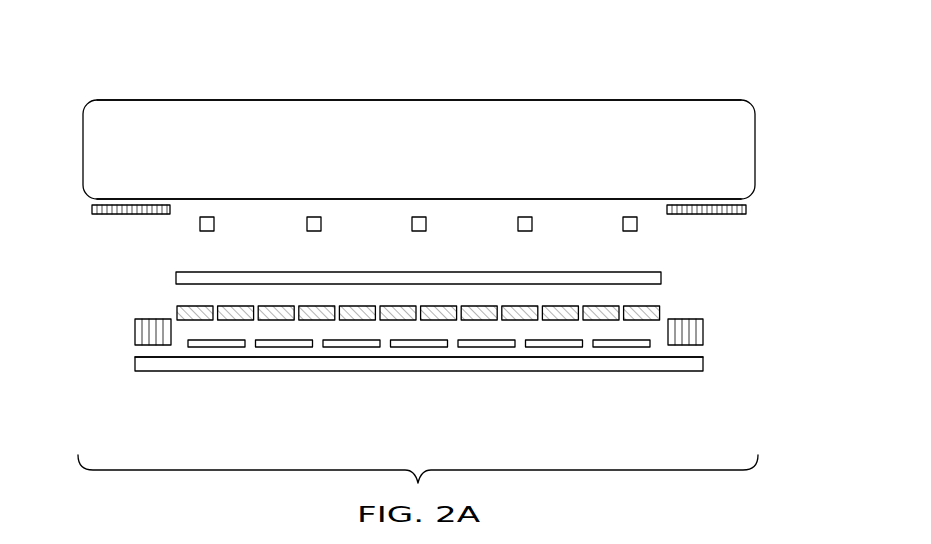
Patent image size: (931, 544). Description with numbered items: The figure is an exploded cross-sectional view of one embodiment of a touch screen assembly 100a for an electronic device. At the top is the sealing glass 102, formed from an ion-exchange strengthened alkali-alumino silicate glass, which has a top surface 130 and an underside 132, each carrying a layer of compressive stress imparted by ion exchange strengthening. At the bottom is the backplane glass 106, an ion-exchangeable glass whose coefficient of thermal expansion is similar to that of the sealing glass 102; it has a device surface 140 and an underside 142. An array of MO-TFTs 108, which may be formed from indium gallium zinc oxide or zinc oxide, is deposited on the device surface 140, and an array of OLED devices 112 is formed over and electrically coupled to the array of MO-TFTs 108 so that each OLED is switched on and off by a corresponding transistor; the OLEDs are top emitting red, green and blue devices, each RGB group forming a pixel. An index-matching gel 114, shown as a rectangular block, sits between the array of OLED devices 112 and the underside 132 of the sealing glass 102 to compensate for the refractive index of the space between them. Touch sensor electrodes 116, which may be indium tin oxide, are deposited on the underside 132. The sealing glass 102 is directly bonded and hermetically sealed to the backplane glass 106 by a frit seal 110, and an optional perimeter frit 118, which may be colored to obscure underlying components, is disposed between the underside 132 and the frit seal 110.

The touch screen assembly 100a is at (703, 65).
The sealing glass 102 is at (768, 134).
The top surface 130 is at (230, 100).
The underside 132 is at (232, 199).
The perimeter frit 118 is at (93, 208).
The touch sensor electrodes 116 is at (427, 222).
The index-matching gel 114 is at (176, 278).
The array of OLED devices 112 is at (177, 310).
The frit seal 110 is at (703, 320).
The array of MO-TFTs 108 is at (280, 347).
The device surface 140 is at (701, 357).
The underside 142 is at (685, 372).
The backplane glass 106 is at (587, 380).